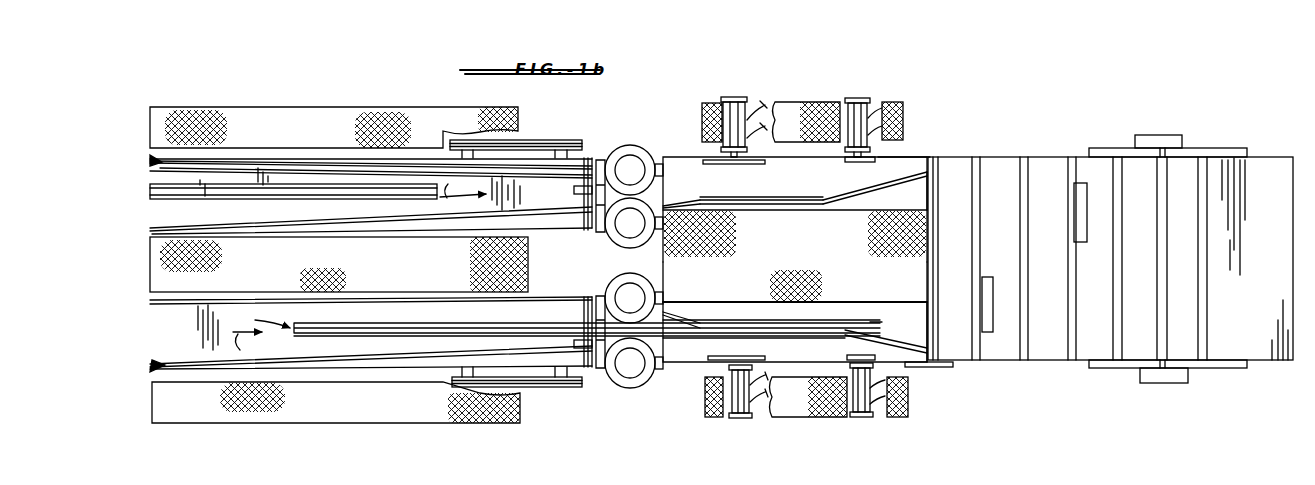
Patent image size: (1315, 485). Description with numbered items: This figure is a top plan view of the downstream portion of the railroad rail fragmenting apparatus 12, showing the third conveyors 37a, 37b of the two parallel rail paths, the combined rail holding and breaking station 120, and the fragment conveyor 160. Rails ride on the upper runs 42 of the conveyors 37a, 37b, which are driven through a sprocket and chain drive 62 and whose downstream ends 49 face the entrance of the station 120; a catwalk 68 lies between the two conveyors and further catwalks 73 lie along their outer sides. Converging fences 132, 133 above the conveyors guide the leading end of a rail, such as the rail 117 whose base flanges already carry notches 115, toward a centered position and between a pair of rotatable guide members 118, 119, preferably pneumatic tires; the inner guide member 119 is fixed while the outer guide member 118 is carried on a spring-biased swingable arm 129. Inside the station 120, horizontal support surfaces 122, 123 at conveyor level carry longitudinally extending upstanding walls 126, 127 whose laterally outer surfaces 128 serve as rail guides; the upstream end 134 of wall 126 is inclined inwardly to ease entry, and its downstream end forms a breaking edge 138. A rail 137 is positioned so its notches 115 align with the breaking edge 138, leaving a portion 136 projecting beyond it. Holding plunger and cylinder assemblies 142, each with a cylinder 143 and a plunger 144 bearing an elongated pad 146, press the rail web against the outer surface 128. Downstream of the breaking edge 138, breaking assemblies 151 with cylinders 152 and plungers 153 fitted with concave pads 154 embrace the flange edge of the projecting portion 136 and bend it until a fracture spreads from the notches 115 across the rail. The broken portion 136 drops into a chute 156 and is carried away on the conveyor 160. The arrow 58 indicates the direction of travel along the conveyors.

The railroad rail fragmenting apparatus 12 is at (1032, 128).
The third conveyor of path A 37a is at (158, 378).
The third conveyor of path B 37b is at (153, 156).
The upper run 42 is at (460, 217).
The downstream end 49 is at (590, 188).
The direction of web travel 58 is at (359, 268).
The sprocket and chain drive 62 is at (531, 139).
The catwalk 68 is at (412, 269).
The catwalk 73 is at (322, 108).
The notch 115 is at (842, 339).
The rail 117 is at (150, 194).
The laterally outer rotatable guide member 118 is at (613, 150).
The laterally inner rotatable guide member 119 is at (612, 243).
The combined rail holding and breaking station 120 is at (951, 153).
The support surface 122 is at (800, 358).
The support surface 123 is at (744, 188).
The upstanding wall 126 is at (748, 322).
The upstanding wall 127 is at (765, 212).
The laterally outer surface 128 is at (800, 207).
The swingable arm 129 is at (653, 162).
The converging fence 132 is at (340, 218).
The converging fence 133 is at (320, 162).
The upstream end of wall 134 is at (672, 204).
The rail portion to be fragmented 136 is at (880, 323).
The rail 137 is at (255, 318).
The breaking edge 138 is at (818, 202).
The plunger and cylinder assembly 142 is at (730, 95).
The cylinder 143 is at (750, 120).
The plunger 144 is at (728, 153).
The elongated pad 146 is at (755, 165).
The plunger and cylinder assembly 151 is at (857, 97).
The cylinder 152 is at (809, 272).
The plunger 153 is at (880, 160).
The concave pad 154 is at (870, 160).
The chute 156 is at (915, 312).
The conveyor 160 is at (1053, 150).